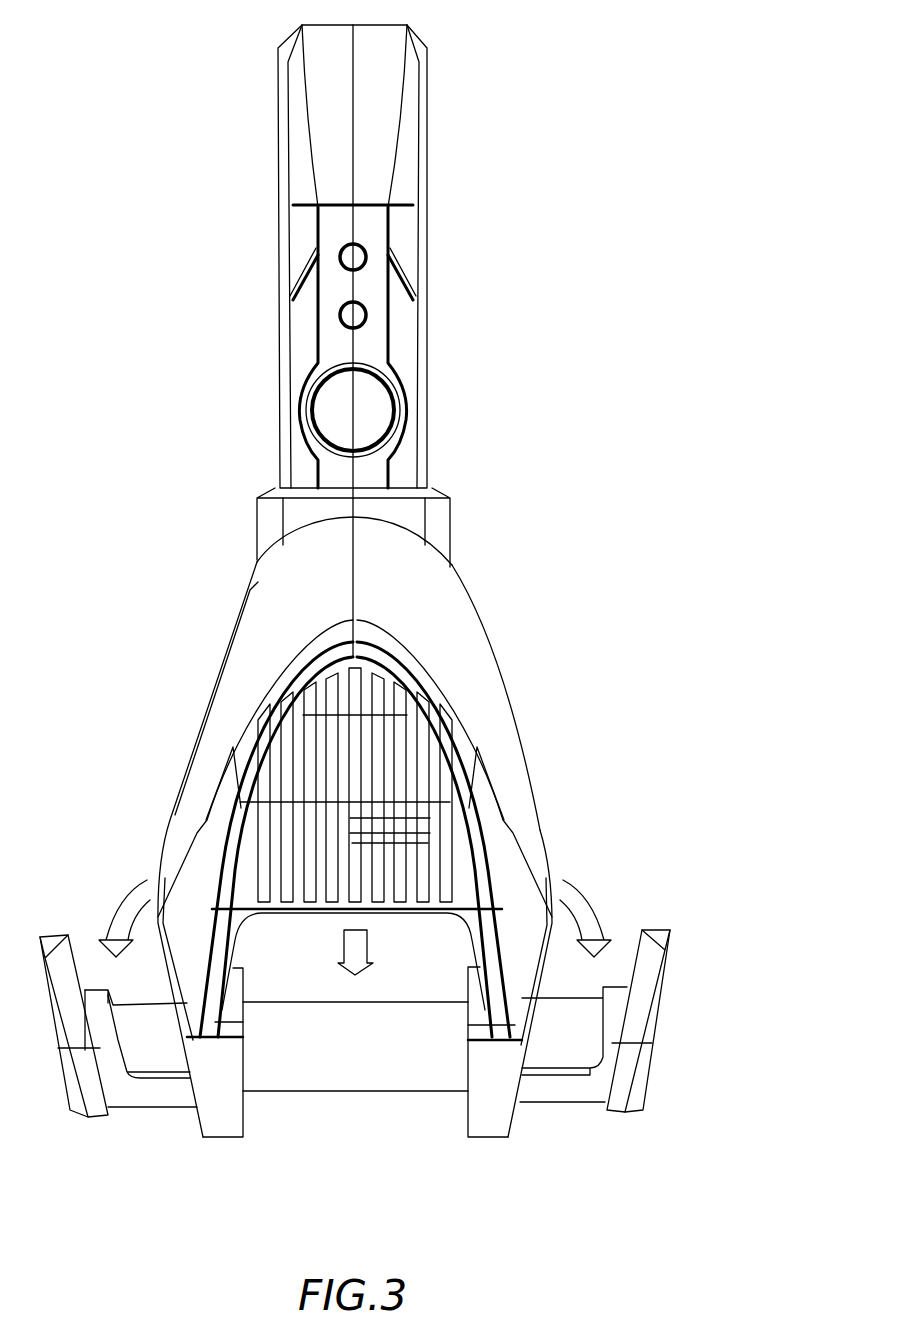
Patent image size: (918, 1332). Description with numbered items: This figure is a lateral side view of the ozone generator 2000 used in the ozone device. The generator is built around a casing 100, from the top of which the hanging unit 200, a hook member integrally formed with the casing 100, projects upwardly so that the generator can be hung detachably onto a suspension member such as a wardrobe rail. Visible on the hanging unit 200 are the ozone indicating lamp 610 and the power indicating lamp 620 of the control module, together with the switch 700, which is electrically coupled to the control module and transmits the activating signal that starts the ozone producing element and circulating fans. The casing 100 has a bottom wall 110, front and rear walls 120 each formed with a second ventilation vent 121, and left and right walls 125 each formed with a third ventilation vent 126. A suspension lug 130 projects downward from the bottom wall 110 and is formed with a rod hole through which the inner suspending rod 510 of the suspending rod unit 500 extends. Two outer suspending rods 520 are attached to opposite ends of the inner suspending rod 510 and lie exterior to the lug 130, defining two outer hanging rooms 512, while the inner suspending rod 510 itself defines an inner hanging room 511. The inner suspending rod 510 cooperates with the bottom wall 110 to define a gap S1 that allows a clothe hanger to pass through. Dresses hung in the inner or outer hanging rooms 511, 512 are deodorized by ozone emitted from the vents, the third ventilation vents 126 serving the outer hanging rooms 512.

The ozone generator 2000 is at (636, 33).
The hanging unit 200 is at (415, 341).
The ozone indicating lamp 610 is at (360, 252).
The power indicating lamp 620 is at (360, 316).
The switch 700 is at (380, 413).
The casing 100 is at (363, 827).
The left and right walls 125 is at (522, 728).
The third ventilation vent 126 is at (547, 868).
The front and rear walls 120 is at (460, 833).
The second ventilation vent 121 is at (420, 772).
The bottom wall 110 is at (297, 914).
The suspension lug 130 is at (493, 1122).
The suspending rod unit 500 is at (388, 1079).
The inner hanging room 511 is at (297, 1092).
The inner suspending rod 510 is at (279, 1106).
The outer hanging rooms 512 is at (570, 1025).
The outer suspending rods 520 is at (637, 1078).
The gap S1 is at (357, 985).